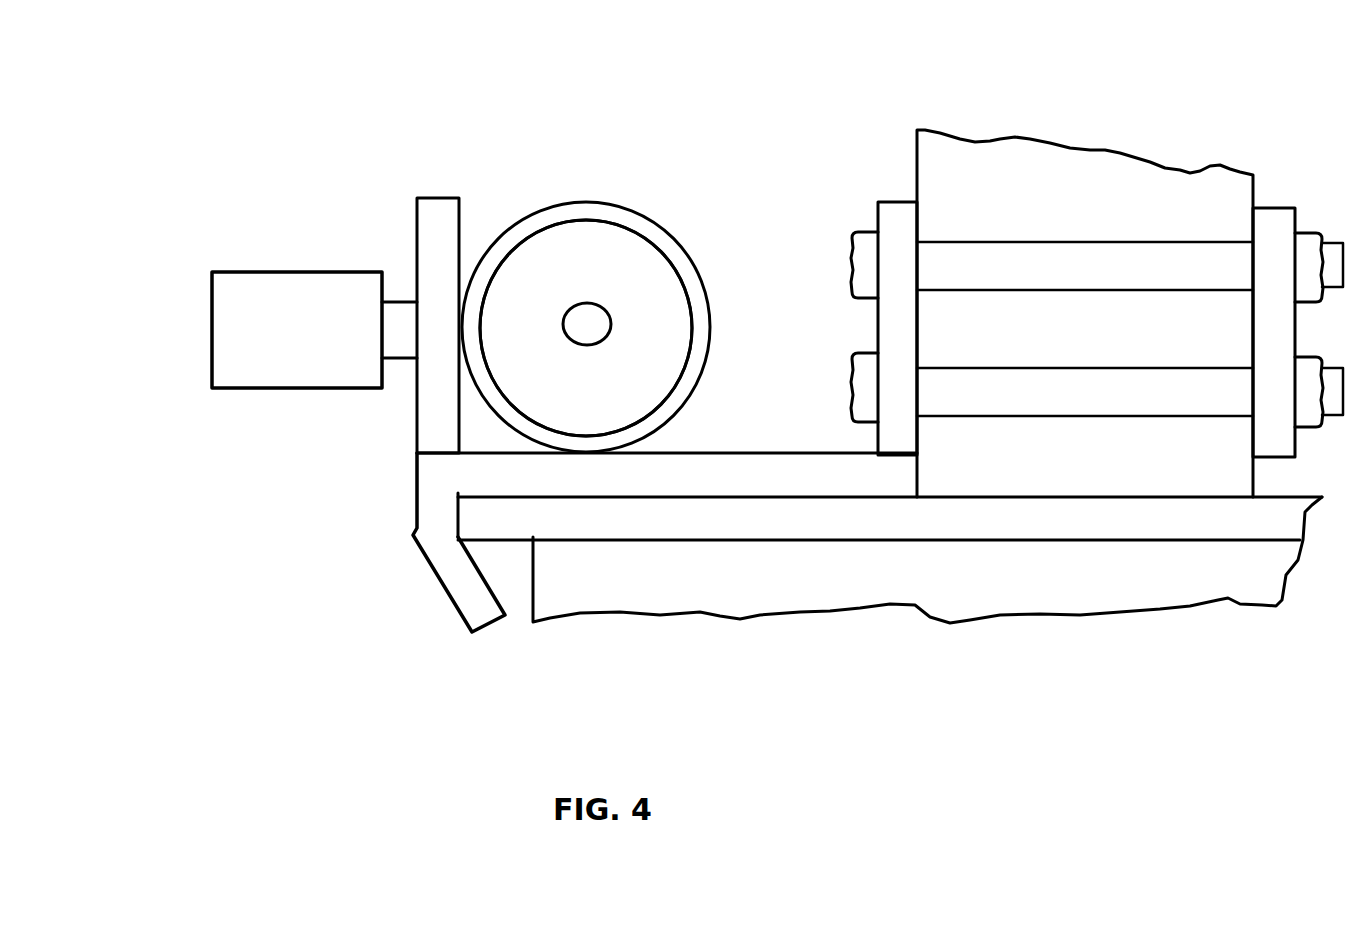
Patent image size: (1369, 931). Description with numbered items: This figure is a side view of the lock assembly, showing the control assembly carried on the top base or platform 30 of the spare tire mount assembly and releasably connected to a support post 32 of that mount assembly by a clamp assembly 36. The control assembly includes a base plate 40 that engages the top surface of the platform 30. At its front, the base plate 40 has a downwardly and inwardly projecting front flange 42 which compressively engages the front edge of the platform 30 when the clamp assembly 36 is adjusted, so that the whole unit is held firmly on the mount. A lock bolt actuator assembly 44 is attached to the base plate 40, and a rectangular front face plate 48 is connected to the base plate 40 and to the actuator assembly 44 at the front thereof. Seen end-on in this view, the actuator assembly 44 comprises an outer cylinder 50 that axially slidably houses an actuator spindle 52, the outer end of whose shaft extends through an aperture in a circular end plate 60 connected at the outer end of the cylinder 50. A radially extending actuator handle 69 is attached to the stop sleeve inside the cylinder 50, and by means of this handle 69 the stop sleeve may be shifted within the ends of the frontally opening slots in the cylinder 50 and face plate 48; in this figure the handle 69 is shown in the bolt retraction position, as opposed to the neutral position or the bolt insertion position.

The platform 30 is at (1120, 525).
The support post 32 is at (1198, 190).
The clamp assembly 36 is at (890, 197).
The base plate 40 is at (782, 475).
The front flange 42 is at (447, 576).
The lock bolt actuator assembly 44 is at (622, 205).
The front face plate 48 is at (427, 218).
The outer cylinder 50 is at (550, 213).
The actuator spindle 52 is at (600, 328).
The end plate 60 is at (660, 287).
The actuator handle 69 is at (228, 310).